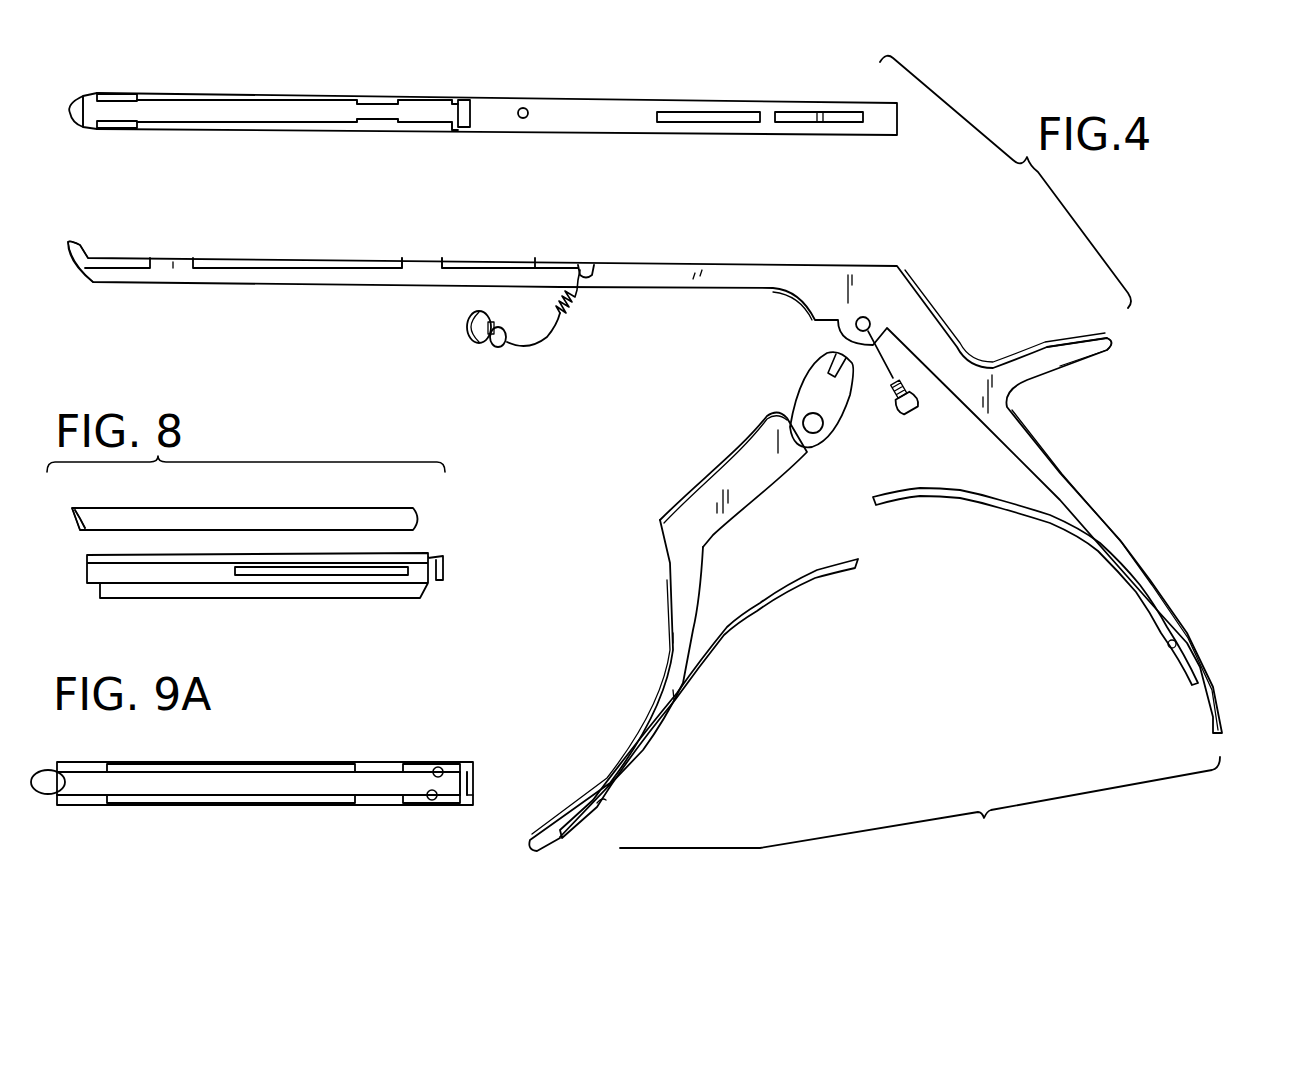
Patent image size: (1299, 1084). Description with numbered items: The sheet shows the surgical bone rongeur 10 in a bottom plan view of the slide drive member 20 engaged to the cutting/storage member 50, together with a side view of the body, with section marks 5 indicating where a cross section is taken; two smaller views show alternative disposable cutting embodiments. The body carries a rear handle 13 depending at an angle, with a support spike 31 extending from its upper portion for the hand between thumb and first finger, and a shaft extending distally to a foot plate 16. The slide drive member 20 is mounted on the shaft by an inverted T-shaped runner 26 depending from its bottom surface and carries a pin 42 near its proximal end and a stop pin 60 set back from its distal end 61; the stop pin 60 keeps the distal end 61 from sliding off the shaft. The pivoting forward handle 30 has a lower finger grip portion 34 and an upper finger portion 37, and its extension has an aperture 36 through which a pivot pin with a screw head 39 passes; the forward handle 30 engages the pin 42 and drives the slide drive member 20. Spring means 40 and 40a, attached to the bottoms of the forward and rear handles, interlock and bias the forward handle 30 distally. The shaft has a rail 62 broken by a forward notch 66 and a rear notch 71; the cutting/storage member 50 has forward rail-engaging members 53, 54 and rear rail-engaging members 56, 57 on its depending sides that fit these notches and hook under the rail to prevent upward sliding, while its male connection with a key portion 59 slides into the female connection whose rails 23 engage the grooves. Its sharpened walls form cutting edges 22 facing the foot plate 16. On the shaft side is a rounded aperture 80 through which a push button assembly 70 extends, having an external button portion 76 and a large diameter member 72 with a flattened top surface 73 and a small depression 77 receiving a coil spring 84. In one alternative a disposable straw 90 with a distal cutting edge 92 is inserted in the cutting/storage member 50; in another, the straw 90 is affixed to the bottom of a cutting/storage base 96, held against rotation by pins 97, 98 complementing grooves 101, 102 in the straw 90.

In FIG. 4, the section line 5- 5 is at (102, 212).
In FIG. 4, the surgical bone rongeur 10 is at (988, 276).
In FIG. 4, the rear handle 13 is at (640, 487).
In FIG. 4, the foot plate 16 is at (68, 257).
In FIG. 4, the slide drive member 20 is at (645, 118).
In FIG. 4, the cutting edges 22 is at (73, 108).
In FIG. 4, the rails 23 is at (452, 97).
In FIG. 4, the inverted T-shaped runner 26 is at (728, 115).
In FIG. 4, the forward handle 30 is at (668, 631).
In FIG. 4, the support spike 31 is at (1107, 330).
In FIG. 4, the lower finger grip portion 34 is at (667, 623).
In FIG. 4, the aperture 36 is at (822, 430).
In FIG. 4, the upper finger portion 37 is at (697, 498).
In FIG. 4, the screw head 39 is at (927, 410).
In FIG. 4, the spring means 40 is at (810, 580).
In FIG. 4, the spring means 40a is at (1033, 513).
In FIG. 4, the pin 42 is at (835, 112).
In FIG. 4, the cutting/storage member 50 is at (273, 116).
In FIG. 8, the cutting/storage member 50 is at (418, 577).
In FIG. 4, the forward rail-engaging member 53 is at (127, 127).
In FIG. 4, the forward rail-engaging member 54 is at (123, 97).
In FIG. 4, the rear rail-engaging member 56 is at (380, 101).
In FIG. 4, the rear rail-engaging member 57 is at (370, 124).
In FIG. 4, the key portion 59 is at (483, 100).
In FIG. 4, the stop pin 60 is at (525, 120).
In FIG. 4, the distal end 61 is at (498, 112).
In FIG. 4, the rail 62 is at (339, 244).
In FIG. 4, the forward notch 66 is at (173, 265).
In FIG. 4, the push button assembly 70 is at (457, 353).
In FIG. 4, the rear notch 71 is at (430, 262).
In FIG. 4, the large diameter member 72 is at (488, 348).
In FIG. 4, the flattened top surface 73 is at (497, 323).
In FIG. 4, the external button portion 76 is at (463, 320).
In FIG. 4, the small depression 77 is at (500, 348).
In FIG. 4, the rounded aperture 80 is at (580, 270).
In FIG. 4, the coil spring 84 is at (567, 313).
In FIG. 8, the straw 90 is at (237, 497).
In FIG. 9A, the straw 90 is at (228, 765).
In FIG. 8, the cutting edge 92 is at (62, 490).
In FIG. 9A, the cutting edge 92 is at (42, 772).
In FIG. 9A, the cutting/storage base 96 is at (340, 810).
In FIG. 9A, the pin 97 is at (443, 767).
In FIG. 9A, the pin 98 is at (442, 803).
In FIG. 9A, the groove 101 is at (438, 770).
In FIG. 9A, the groove 102 is at (428, 797).